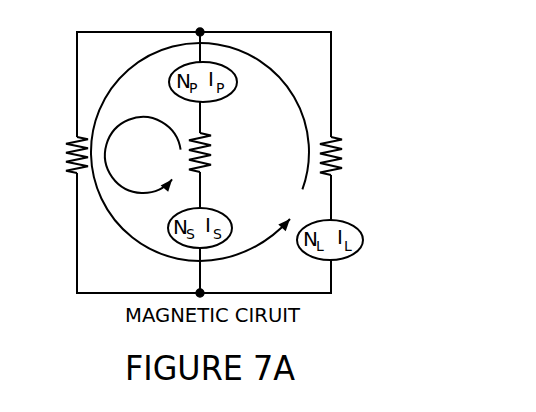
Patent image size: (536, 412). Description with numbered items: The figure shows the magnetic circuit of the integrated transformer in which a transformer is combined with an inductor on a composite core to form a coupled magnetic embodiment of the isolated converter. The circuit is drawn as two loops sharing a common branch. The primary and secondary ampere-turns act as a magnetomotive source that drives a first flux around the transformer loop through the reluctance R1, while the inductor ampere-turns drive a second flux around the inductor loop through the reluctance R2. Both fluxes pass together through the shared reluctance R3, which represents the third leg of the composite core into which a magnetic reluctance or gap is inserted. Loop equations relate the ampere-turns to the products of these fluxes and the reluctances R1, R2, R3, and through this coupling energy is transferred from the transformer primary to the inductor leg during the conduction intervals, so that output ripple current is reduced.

The reluctance R1 is at (219, 153).
The reluctance R2 is at (348, 156).
The reluctance R3 is at (59, 155).